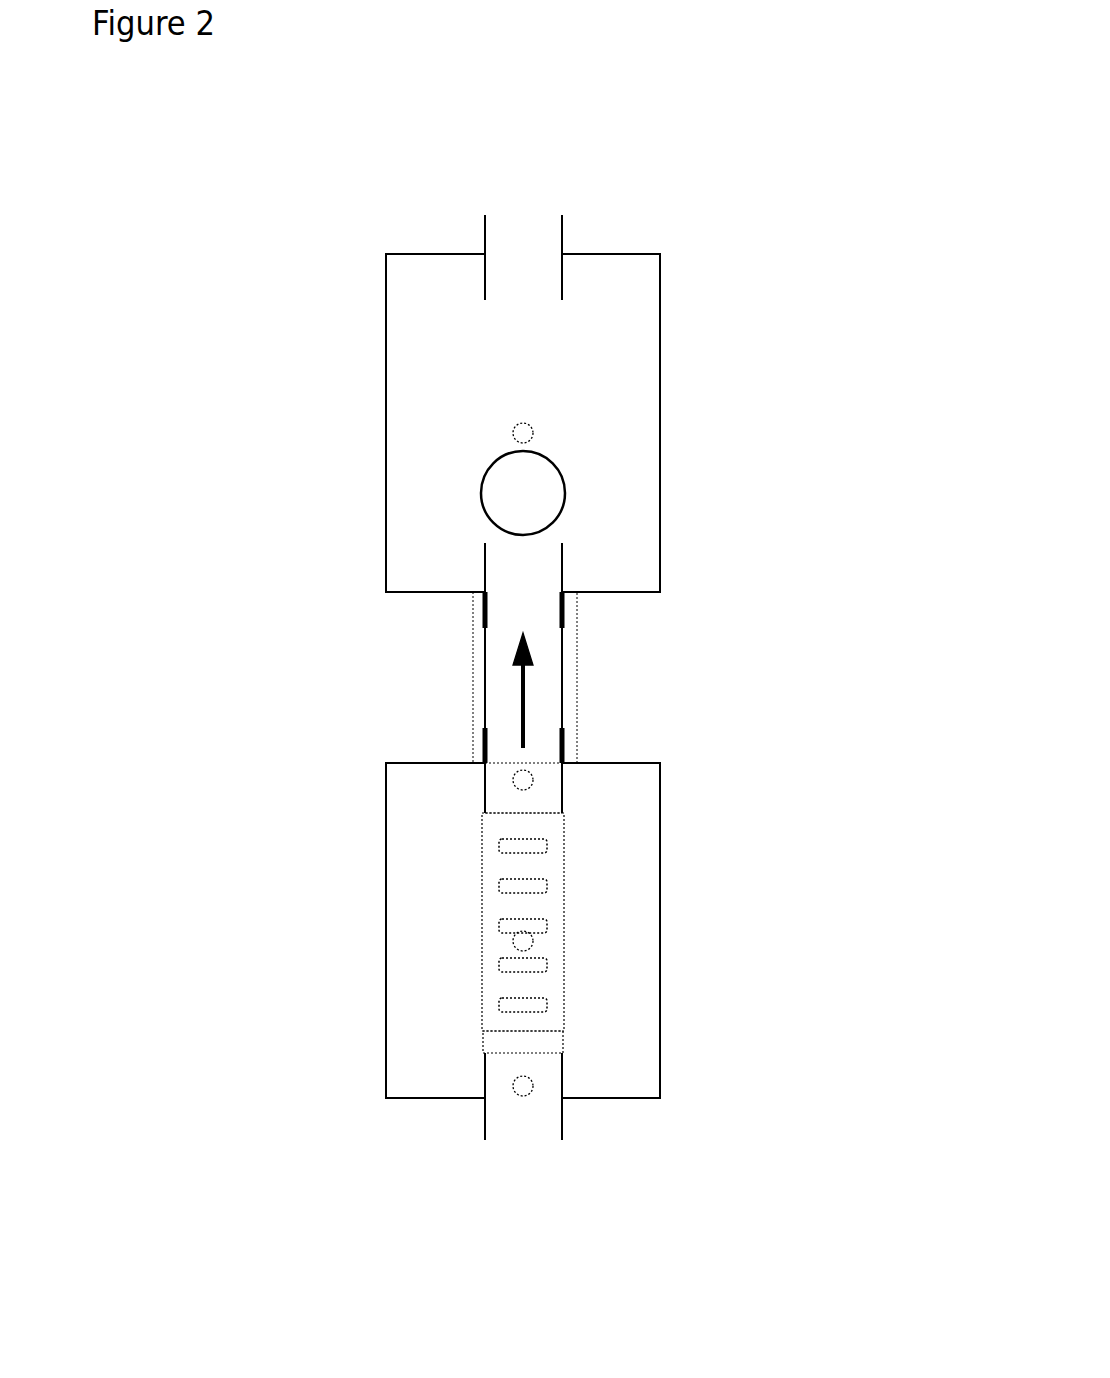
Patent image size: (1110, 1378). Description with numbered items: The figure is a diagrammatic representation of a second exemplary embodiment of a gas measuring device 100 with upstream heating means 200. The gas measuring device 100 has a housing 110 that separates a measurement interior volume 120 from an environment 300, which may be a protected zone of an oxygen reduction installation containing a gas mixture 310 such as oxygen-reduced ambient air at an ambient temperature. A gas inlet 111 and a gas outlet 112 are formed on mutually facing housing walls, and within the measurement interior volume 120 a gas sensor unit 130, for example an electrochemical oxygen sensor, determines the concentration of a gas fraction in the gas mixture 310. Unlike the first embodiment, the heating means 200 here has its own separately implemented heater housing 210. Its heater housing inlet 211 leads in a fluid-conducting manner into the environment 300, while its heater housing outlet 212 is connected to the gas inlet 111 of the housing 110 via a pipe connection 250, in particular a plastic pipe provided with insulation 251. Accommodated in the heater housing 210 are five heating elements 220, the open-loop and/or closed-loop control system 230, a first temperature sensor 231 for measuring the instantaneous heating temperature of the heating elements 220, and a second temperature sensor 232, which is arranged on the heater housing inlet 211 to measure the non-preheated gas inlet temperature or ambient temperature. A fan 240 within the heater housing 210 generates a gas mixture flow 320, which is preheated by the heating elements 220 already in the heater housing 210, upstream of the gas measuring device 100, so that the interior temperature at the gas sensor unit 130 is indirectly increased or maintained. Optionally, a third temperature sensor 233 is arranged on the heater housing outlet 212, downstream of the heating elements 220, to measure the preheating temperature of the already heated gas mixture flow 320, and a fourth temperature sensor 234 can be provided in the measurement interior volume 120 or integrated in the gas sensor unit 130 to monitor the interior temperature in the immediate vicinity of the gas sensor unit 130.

The gas measuring device 100 is at (602, 405).
The housing 110 is at (602, 405).
The gas inlet 111 is at (659, 567).
The gas outlet 112 is at (602, 191).
The measurement interior volume 120 is at (502, 383).
The gas sensor unit 130 is at (420, 567).
The heating means 200 is at (602, 901).
The heater housing 210 is at (602, 901).
The heater housing inlet 211 is at (451, 1139).
The heater housing outlet 212 is at (417, 839).
The heating elements 220 is at (602, 1009).
The open-loop and/or closed-loop control system 230 is at (357, 1044).
The first temperature sensor 231 is at (378, 958).
The second temperature sensor 232 is at (495, 1177).
The third temperature sensor 233 is at (652, 739).
The fourth temperature sensor 234 is at (375, 464).
The fan 240 is at (584, 1172).
The pipe connection 250 is at (409, 677).
The insulation 251 is at (422, 701).
The environment 300 is at (210, 233).
The gas mixture 310 is at (262, 233).
The gas mixture flow 320 is at (523, 672).